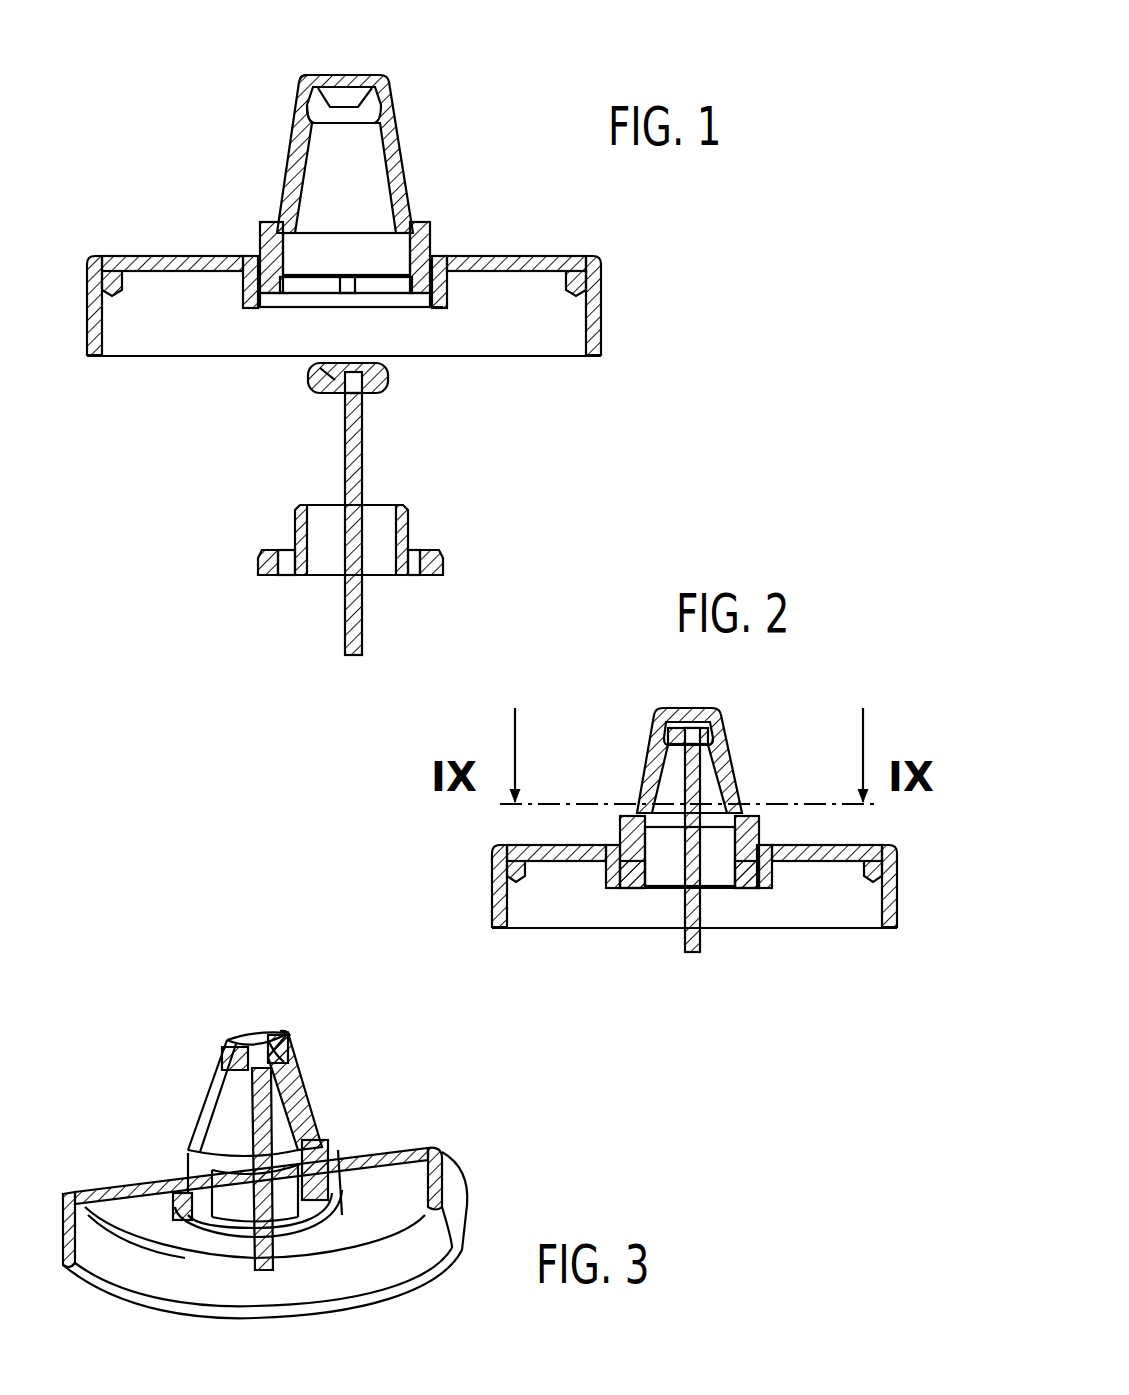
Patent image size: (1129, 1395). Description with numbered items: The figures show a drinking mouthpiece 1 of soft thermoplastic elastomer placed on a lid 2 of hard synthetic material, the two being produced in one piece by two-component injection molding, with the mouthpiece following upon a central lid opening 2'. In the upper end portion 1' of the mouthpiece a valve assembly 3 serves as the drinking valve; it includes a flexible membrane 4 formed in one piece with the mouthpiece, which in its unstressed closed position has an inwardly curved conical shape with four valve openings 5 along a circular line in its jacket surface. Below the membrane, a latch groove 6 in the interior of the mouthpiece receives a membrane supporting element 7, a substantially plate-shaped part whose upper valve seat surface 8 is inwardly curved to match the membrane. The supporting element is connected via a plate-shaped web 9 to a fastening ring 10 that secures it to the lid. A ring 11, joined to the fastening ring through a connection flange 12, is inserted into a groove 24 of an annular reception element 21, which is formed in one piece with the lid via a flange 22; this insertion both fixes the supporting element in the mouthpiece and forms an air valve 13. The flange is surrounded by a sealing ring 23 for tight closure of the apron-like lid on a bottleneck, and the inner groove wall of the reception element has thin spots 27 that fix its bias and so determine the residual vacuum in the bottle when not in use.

In FIG. 1, the drinking mouthpiece 1 is at (381, 191).
In FIG. 2, the drinking mouthpiece 1 is at (718, 798).
In FIG. 3, the drinking mouthpiece 1 is at (294, 1119).
In FIG. 1, the upper end portion 1' is at (260, 62).
In FIG. 1, the lid 2 is at (388, 319).
In FIG. 2, the lid 2 is at (694, 923).
In FIG. 3, the lid 2 is at (265, 1196).
In FIG. 1, the lid opening 2' is at (407, 219).
In FIG. 2, the valve assembly 3 is at (652, 715).
In FIG. 3, the valve assembly 3 is at (285, 1028).
In FIG. 1, the flexible membrane 4 is at (366, 87).
In FIG. 1, the valve openings 5 is at (318, 87).
In FIG. 1, the latch groove 6 is at (300, 110).
In FIG. 2, the latch groove 6 is at (732, 722).
In FIG. 3, the latch groove 6 is at (294, 1038).
In FIG. 1, the membrane supporting element 7 is at (385, 384).
In FIG. 2, the membrane supporting element 7 is at (672, 735).
In FIG. 3, the membrane supporting element 7 is at (235, 1050).
In FIG. 1, the valve seat surface 8 is at (310, 380).
In FIG. 1, the plate-shaped web 9 is at (355, 478).
In FIG. 2, the plate-shaped web 9 is at (688, 780).
In FIG. 3, the plate-shaped web 9 is at (258, 1127).
In FIG. 1, the fastening ring 10 is at (298, 520).
In FIG. 1, the ring 11 is at (268, 553).
In FIG. 2, the ring 11 is at (742, 880).
In FIG. 3, the ring 11 is at (345, 1153).
In FIG. 1, the connection flange 12 is at (275, 573).
In FIG. 2, the air valve 13 is at (615, 900).
In FIG. 3, the air valve 13 is at (182, 1220).
In FIG. 1, the reception element 21 is at (238, 307).
In FIG. 1, the flange 22 is at (160, 264).
In FIG. 1, the sealing ring 23 is at (92, 257).
In FIG. 1, the groove 24 is at (258, 305).
In FIG. 1, the thin spots 27 is at (355, 284).